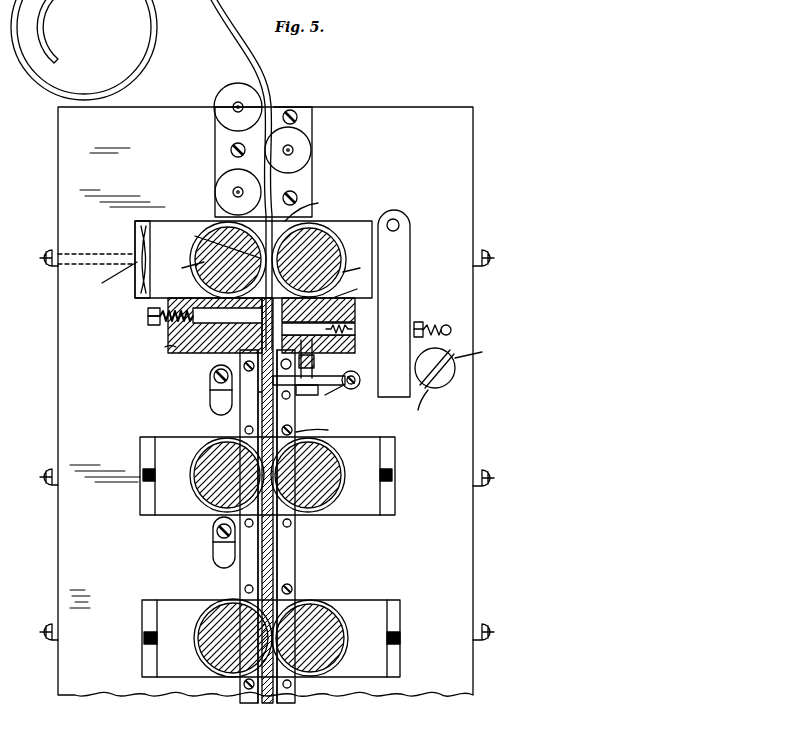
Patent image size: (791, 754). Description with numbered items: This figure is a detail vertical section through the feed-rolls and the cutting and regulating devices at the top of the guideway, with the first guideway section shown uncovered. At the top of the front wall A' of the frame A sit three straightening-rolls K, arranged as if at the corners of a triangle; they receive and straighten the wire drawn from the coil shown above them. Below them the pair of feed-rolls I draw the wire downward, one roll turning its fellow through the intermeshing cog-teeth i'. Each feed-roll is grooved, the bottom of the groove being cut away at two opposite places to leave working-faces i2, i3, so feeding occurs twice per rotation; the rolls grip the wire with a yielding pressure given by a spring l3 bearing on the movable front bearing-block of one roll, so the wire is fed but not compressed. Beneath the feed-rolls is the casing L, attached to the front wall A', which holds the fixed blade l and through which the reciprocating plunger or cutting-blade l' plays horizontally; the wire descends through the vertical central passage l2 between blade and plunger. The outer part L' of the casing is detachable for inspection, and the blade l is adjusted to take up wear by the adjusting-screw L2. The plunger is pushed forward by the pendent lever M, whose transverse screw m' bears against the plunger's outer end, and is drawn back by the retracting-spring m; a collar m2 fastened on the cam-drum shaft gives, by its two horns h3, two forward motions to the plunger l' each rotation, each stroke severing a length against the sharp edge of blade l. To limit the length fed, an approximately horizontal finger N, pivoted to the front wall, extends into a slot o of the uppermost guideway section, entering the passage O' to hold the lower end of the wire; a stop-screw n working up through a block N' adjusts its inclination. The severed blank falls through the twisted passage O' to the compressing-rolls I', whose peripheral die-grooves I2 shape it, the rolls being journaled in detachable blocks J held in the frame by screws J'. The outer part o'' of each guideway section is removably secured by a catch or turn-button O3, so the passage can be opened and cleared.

The frame A is at (265, 401).
The front wall A' is at (96, 249).
The screws J' is at (277, 446).
The straightening-rolls K is at (230, 150).
The working-face i3 is at (307, 205).
The feed-rolls I is at (253, 259).
The cog-teeth i' is at (219, 240).
The working-face i2 is at (267, 265).
The vertical central passage l2 is at (351, 287).
The spring l3 is at (110, 276).
The pendent lever M is at (410, 272).
The transverse screw m' is at (427, 313).
The retracting-spring m is at (375, 340).
The collar m2 is at (435, 377).
The horns h3 is at (455, 384).
The casing L is at (261, 331).
The fixed blade l is at (227, 316).
The adjusting-screw L2 is at (148, 318).
The outer part of casing L' is at (159, 349).
The reciprocating plunger l' is at (318, 327).
The block N' is at (316, 371).
The stop-screw n is at (310, 376).
The finger N is at (331, 396).
The slot o is at (266, 500).
The outer part of guideway section o'' is at (253, 391).
The passage O' is at (320, 427).
The turn-button O3 is at (210, 396).
The die-grooves I2 is at (340, 468).
The compressing-rolls I' is at (260, 485).
The detachable blocks J is at (271, 638).